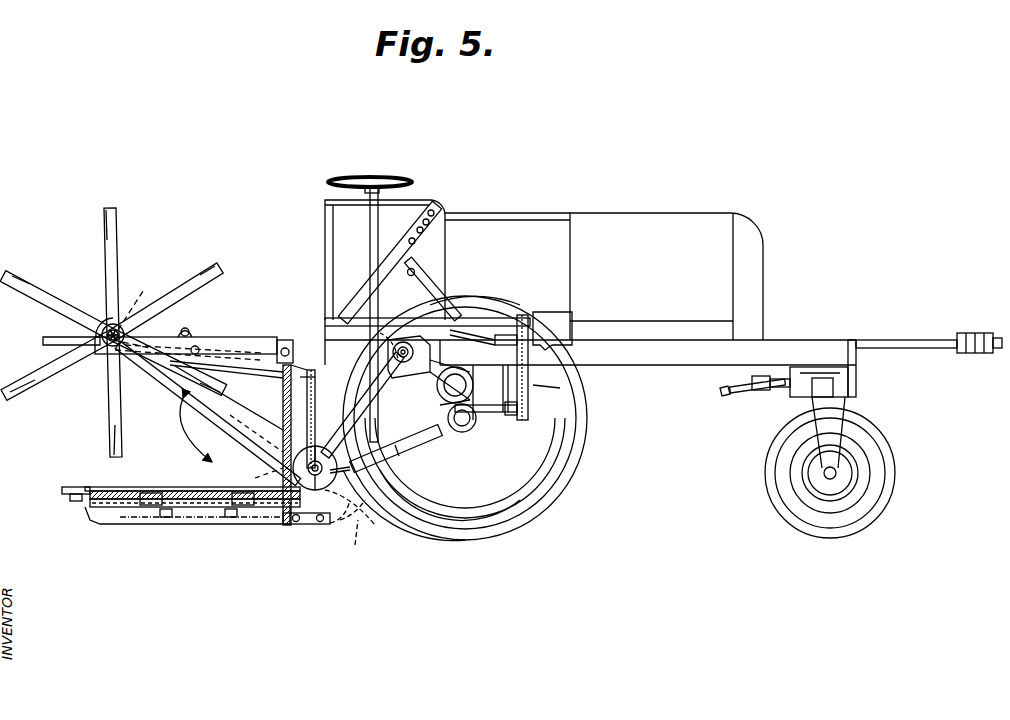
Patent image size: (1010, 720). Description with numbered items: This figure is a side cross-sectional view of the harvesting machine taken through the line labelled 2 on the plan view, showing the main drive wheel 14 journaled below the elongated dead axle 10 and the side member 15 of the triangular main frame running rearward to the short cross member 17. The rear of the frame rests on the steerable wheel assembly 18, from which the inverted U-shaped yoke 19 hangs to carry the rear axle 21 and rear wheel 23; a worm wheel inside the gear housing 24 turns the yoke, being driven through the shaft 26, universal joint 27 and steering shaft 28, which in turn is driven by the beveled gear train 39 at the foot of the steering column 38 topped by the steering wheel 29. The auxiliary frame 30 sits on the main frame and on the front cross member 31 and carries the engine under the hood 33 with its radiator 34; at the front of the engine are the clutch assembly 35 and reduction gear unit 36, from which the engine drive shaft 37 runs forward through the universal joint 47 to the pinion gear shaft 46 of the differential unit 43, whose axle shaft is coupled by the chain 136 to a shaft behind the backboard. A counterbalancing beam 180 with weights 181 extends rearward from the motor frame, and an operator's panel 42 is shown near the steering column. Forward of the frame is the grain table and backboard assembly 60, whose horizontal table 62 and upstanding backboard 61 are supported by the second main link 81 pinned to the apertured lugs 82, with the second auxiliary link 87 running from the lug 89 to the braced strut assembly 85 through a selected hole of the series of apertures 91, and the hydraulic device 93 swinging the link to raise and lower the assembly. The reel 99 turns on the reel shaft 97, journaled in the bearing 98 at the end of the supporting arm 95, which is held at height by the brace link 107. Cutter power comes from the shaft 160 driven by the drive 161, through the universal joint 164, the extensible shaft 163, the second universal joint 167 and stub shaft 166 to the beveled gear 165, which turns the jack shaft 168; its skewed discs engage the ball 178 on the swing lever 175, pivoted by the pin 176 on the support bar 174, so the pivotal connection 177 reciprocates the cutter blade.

The operator station 2 is at (338, 228).
The dead axle 10 is at (442, 370).
The main drive wheel 14 is at (585, 450).
The side member 15 is at (672, 362).
The cross member 17 is at (850, 341).
The steerable wheel assembly 18 is at (856, 362).
The yoke 19 is at (848, 410).
The rear axle 21 is at (836, 473).
The rear wheel 23 is at (885, 502).
The gear housing 24 is at (815, 392).
The shaft 26 is at (780, 395).
The universal joint 27 is at (768, 378).
The steering shaft 28 is at (720, 390).
The steering wheel 29 is at (330, 183).
The auxiliary frame 30 is at (718, 316).
The front cross member 31 is at (478, 305).
The hood 33 is at (682, 220).
The engine cooling radiator 34 is at (763, 276).
The clutch assembly 35 is at (560, 312).
The reduction gear unit 36 is at (560, 300).
The engine drive shaft 37 is at (530, 318).
The steering column 38 is at (370, 240).
The beveled gear train 39 is at (345, 410).
The panel 42 is at (325, 260).
The differential unit 43 is at (415, 318).
The pinion gear shaft 46 is at (490, 330).
The universal joint 47 is at (515, 335).
The grain table and backboard assembly 60 is at (232, 530).
The backboard 61 is at (283, 425).
The table 62 is at (135, 525).
The second main link 81 is at (322, 524).
The apertured lugs 82 is at (298, 525).
The braced strut assembly 85 is at (422, 268).
The second auxiliary link 87 is at (350, 322).
The lug 89 is at (285, 406).
The series of apertures 91 is at (420, 225).
The expansible chamber hydraulic device 93 is at (455, 420).
The supporting arm 95 is at (246, 340).
The reel shaft 97 is at (102, 320).
The bearing 98 is at (122, 318).
The reel 99 is at (118, 272).
The brace link 107 is at (245, 412).
The chain 136 is at (283, 448).
The shaft 160 is at (515, 412).
The gear or chain and sprocket drive 161 is at (560, 388).
The shaft 163 is at (385, 470).
The universal joint 164 is at (470, 432).
The beveled gear 165 is at (360, 516).
The stub shaft 166 is at (395, 508).
The second universal joint 167 is at (340, 472).
The jack shaft 168 is at (283, 474).
The support bar 174 is at (250, 508).
The swing lever 175 is at (156, 508).
The pivot pin 176 is at (213, 462).
The pivotal connection 177 is at (72, 502).
The ball 178 is at (353, 535).
The beam 180 is at (930, 340).
The weights 181 is at (986, 334).